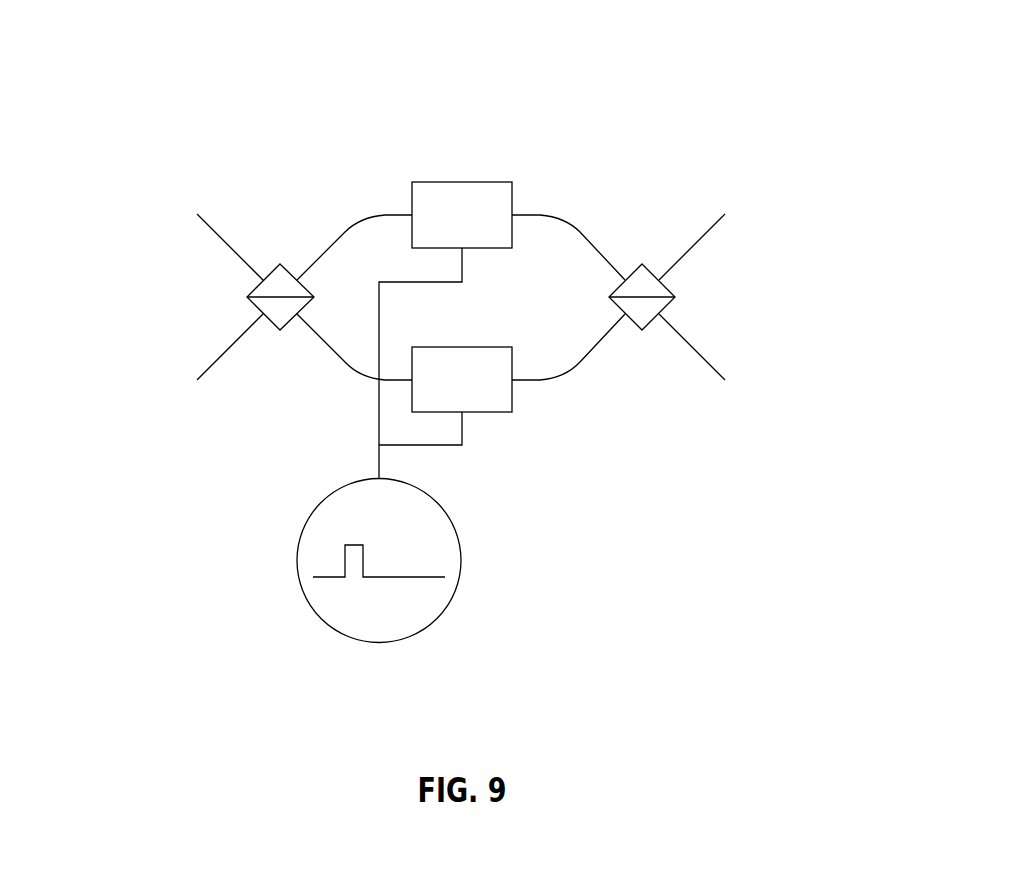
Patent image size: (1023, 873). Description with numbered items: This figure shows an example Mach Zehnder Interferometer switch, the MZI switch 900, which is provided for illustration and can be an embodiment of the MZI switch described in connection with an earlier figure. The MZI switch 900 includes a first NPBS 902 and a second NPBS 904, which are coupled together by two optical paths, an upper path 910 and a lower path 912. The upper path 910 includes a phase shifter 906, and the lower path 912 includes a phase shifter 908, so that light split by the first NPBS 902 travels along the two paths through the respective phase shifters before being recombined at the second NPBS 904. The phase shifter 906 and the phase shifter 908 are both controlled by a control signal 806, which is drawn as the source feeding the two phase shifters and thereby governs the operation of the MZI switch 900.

The MZI switch 900 is at (968, 60).
The first NPBS 902 is at (279, 332).
The second NPBS 904 is at (644, 266).
The phase shifter 906 is at (478, 182).
The phase shifter 908 is at (488, 347).
The upper path 910 is at (352, 223).
The lower path 912 is at (342, 365).
The control signal 806 is at (461, 560).